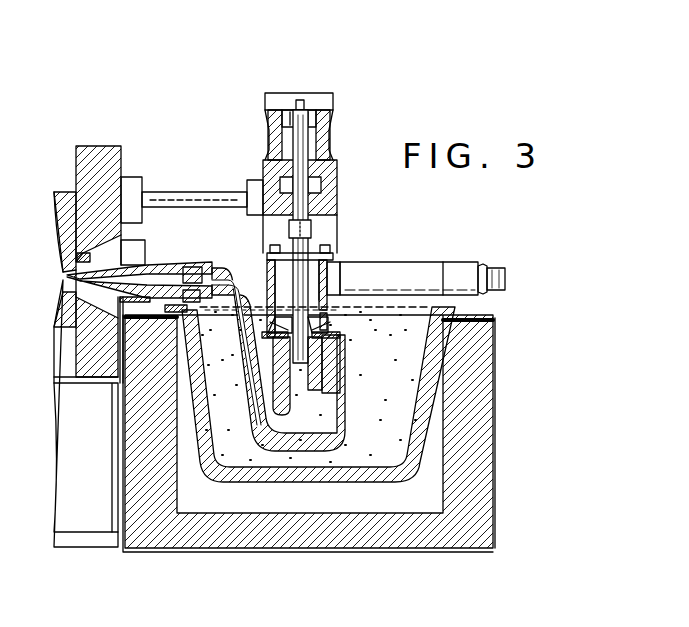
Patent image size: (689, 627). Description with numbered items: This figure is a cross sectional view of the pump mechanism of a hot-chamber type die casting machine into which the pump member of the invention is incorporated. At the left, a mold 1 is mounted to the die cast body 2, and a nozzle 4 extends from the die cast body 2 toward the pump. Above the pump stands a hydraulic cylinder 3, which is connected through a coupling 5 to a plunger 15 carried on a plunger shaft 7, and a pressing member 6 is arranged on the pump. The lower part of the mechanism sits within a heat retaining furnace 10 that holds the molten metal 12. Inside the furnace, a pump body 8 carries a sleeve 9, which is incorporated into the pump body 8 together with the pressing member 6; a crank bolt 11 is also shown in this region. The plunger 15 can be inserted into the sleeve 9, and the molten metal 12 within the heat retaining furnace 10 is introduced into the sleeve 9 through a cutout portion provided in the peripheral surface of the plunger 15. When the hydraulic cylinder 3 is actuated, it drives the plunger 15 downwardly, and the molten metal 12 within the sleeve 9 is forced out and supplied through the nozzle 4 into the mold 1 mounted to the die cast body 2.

The mold 1 is at (62, 190).
The die cast body 2 is at (103, 148).
The hydraulic cylinder 3 is at (283, 93).
The nozzle 4 is at (128, 290).
The coupling 5 is at (311, 228).
The pressing member 6 is at (333, 262).
The plunger shaft 7 is at (316, 300).
The pump body 8 is at (325, 372).
The sleeve 9 is at (318, 386).
The heat retaining furnace 10 is at (237, 472).
The crank bolt 11 is at (302, 425).
The molten metal 12 is at (385, 455).
The plunger 15 is at (290, 325).